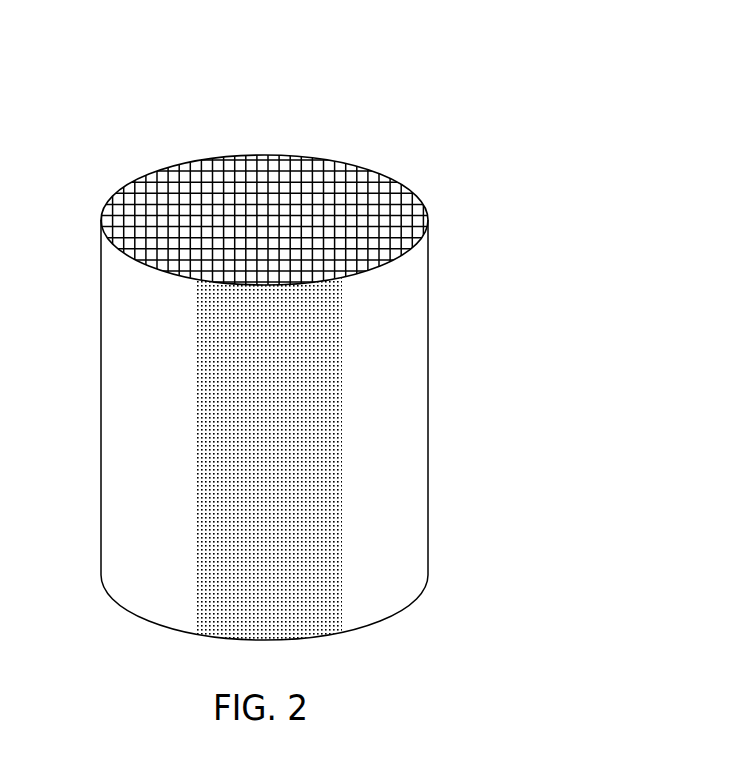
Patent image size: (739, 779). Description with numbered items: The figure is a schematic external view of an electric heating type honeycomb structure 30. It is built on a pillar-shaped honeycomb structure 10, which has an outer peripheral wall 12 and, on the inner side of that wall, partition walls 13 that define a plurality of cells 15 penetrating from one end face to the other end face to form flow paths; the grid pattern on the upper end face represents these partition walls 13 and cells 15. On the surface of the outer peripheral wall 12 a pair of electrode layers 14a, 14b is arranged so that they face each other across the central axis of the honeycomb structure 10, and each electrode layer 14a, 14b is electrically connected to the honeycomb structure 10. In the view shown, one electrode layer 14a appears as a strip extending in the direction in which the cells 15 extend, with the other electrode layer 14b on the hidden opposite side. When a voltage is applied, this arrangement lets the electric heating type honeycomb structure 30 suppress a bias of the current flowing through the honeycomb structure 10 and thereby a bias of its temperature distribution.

The honeycomb structure 10 is at (252, 173).
The outer peripheral wall 12 is at (428, 481).
The partition walls 13 is at (118, 213).
The electrode layer 14a is at (391, 456).
The electrode layer 14b is at (342, 382).
The cells 15 is at (172, 190).
The electric heating type honeycomb structure 30 is at (319, 326).